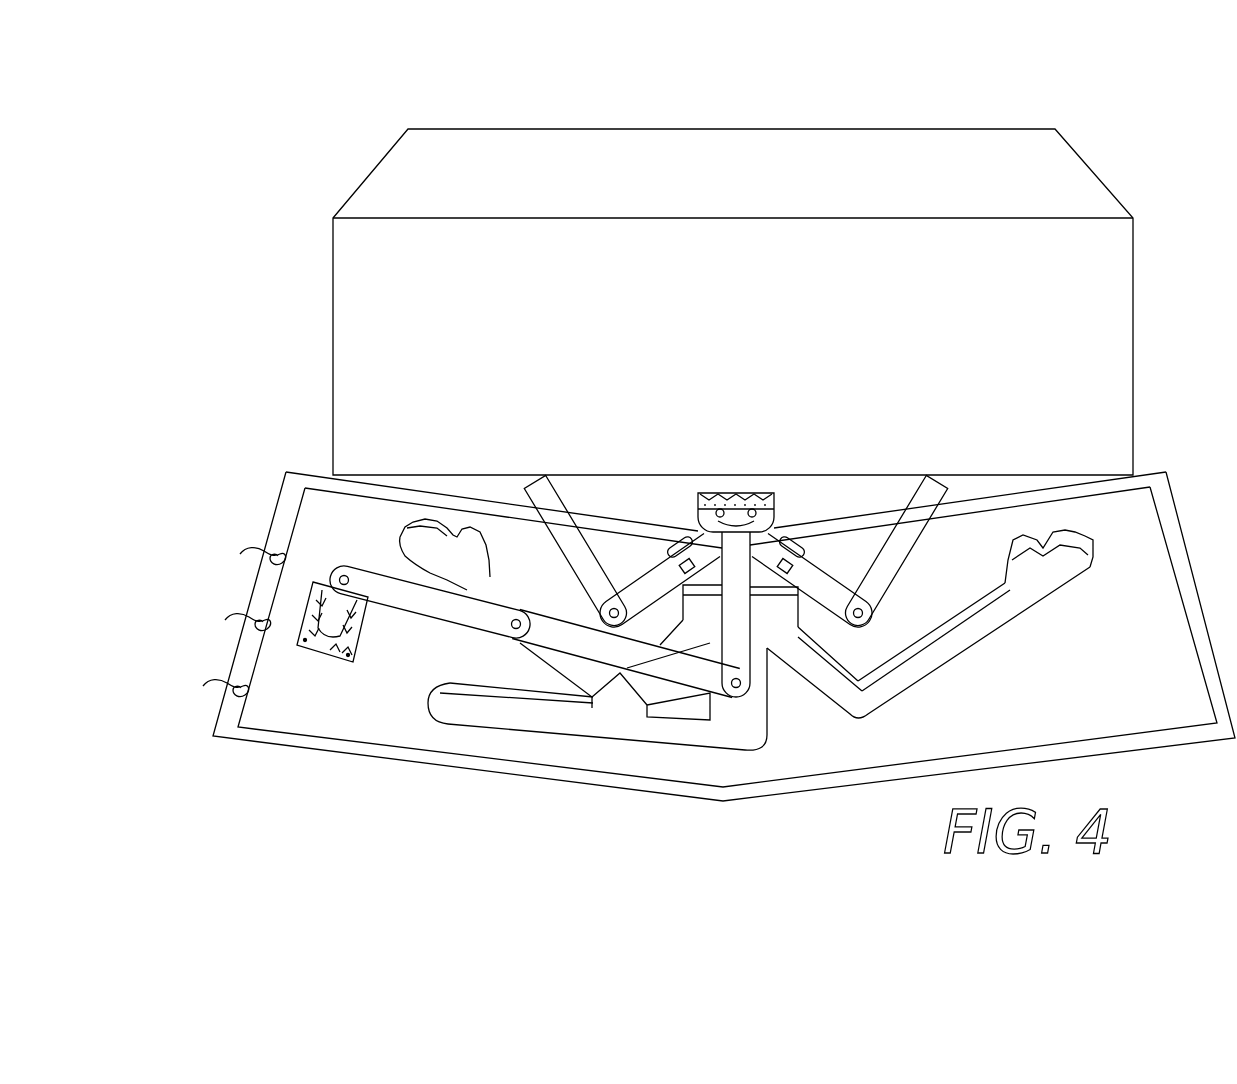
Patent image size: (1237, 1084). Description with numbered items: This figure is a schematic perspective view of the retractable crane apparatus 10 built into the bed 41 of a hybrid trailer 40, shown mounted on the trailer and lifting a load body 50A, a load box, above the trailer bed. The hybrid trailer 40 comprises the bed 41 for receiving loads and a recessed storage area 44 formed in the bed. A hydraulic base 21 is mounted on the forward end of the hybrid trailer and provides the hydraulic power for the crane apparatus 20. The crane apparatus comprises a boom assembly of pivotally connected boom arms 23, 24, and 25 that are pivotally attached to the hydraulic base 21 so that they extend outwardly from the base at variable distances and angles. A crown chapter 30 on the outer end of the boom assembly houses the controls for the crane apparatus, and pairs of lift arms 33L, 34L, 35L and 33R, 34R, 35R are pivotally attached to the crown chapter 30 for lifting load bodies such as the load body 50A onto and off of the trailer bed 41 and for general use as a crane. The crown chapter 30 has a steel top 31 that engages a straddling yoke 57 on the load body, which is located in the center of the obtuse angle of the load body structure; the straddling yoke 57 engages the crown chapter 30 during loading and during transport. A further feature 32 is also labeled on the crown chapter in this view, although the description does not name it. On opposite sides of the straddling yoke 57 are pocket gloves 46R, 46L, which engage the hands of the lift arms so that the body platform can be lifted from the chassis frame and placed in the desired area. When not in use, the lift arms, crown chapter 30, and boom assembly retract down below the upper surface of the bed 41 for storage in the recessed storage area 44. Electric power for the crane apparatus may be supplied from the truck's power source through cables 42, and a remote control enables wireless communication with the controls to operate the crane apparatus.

The retractable crane apparatus 10 is at (293, 440).
The crane apparatus 20 is at (333, 568).
The hydraulic base 21 is at (363, 633).
The boom arm 23 is at (415, 615).
The boom arm 24 is at (378, 572).
The boom arm 25 is at (760, 667).
The crown chapter 30 is at (700, 489).
The steel top 31 is at (756, 492).
The face 32 is at (768, 492).
The lift arm 33R is at (648, 513).
The lift arm 33L is at (840, 515).
The lift arm 34R is at (610, 528).
The lift arm 34L is at (878, 668).
The lift arm 35R is at (555, 530).
The lift arm 35L is at (903, 533).
The hybrid trailer 40 is at (1191, 521).
The bed 41 is at (260, 600).
The cables 42 is at (245, 617).
The recessed storage area 44 is at (465, 707).
The pocket glove 46R is at (525, 480).
The pocket glove 46L is at (947, 480).
The load body 50A is at (380, 157).
The straddling yoke 57 is at (800, 508).